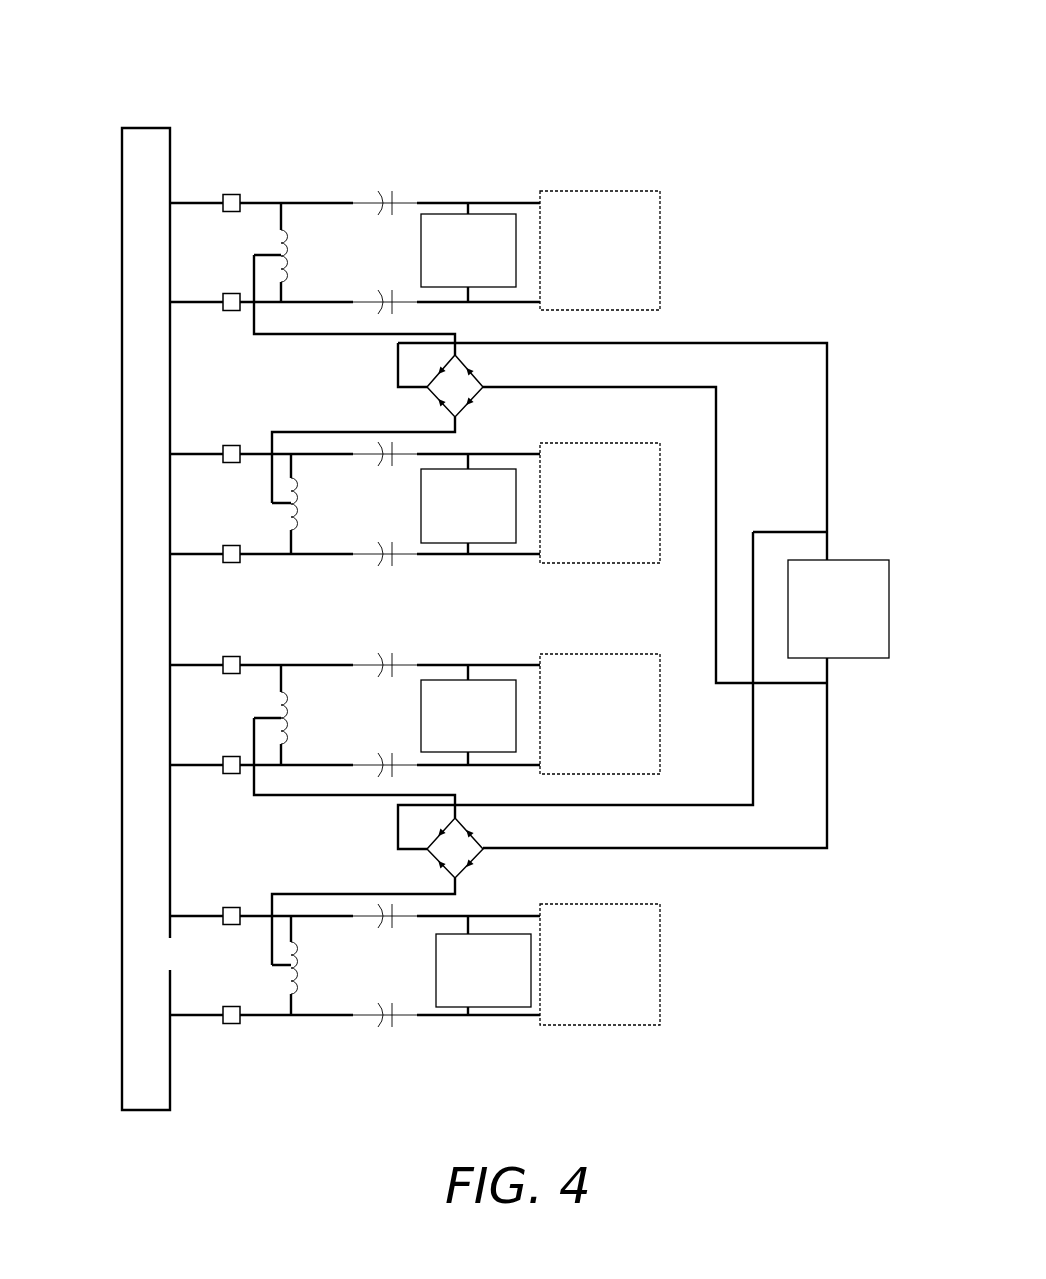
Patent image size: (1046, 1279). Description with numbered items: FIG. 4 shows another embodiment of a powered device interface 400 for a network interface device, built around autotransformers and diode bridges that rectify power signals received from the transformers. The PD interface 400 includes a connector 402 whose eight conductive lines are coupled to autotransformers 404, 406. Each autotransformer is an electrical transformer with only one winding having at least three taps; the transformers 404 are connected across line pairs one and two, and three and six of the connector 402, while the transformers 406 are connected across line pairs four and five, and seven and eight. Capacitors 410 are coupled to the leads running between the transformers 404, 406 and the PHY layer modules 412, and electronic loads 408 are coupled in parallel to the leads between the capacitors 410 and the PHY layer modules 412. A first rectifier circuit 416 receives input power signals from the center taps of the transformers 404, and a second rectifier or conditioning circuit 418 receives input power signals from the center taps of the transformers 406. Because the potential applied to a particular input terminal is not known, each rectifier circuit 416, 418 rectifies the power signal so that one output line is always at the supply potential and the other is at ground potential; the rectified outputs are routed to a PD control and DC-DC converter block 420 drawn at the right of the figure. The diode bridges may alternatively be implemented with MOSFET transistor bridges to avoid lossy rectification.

The PD interface 400 is at (120, 48).
The connector 402 is at (118, 220).
The autotransformers 404 is at (281, 232).
The autotransformers 406 is at (281, 695).
The electronic load 408 is at (420, 262).
The capacitors 410 is at (385, 182).
The PHY layer modules 412 is at (660, 247).
The rectifier circuit 416 is at (483, 372).
The rectifier circuit 418 is at (483, 834).
The PD control and DC-DC converter 420 is at (838, 557).